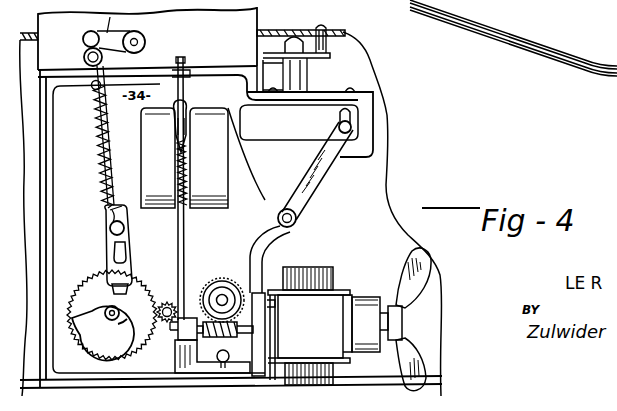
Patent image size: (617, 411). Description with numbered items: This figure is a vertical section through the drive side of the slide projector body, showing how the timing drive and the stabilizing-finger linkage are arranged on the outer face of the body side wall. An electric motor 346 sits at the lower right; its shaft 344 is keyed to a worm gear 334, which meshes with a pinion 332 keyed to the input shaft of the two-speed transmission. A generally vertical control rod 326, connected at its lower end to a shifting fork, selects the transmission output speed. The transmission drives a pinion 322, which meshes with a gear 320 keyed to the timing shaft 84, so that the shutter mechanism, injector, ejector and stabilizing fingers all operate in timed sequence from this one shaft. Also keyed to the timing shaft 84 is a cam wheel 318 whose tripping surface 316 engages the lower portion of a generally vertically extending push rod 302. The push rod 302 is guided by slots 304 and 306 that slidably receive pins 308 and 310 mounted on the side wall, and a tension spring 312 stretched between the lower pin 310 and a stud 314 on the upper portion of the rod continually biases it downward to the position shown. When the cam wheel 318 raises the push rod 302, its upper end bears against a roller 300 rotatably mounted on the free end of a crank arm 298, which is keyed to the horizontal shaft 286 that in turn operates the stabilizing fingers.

The timing shaft 84 is at (110, 310).
The horizontal shaft 286 is at (140, 40).
The crank arm 298 is at (118, 62).
The roller 300 is at (83, 30).
The push rod 302 is at (106, 190).
The slot 304 is at (100, 128).
The slot 306 is at (114, 250).
The pin 308 is at (98, 111).
The pin 310 is at (110, 229).
The tension spring 312 is at (103, 163).
The stud 314 is at (90, 86).
The tripping surface 316 is at (109, 317).
The cam wheel 318 is at (122, 330).
The gear 320 is at (135, 283).
The pinion 322 is at (167, 301).
The control rod 326 is at (186, 223).
The pinion 332 is at (222, 278).
The worm gear 334 is at (240, 328).
The shaft 344 is at (242, 334).
The electric motor 346 is at (316, 276).